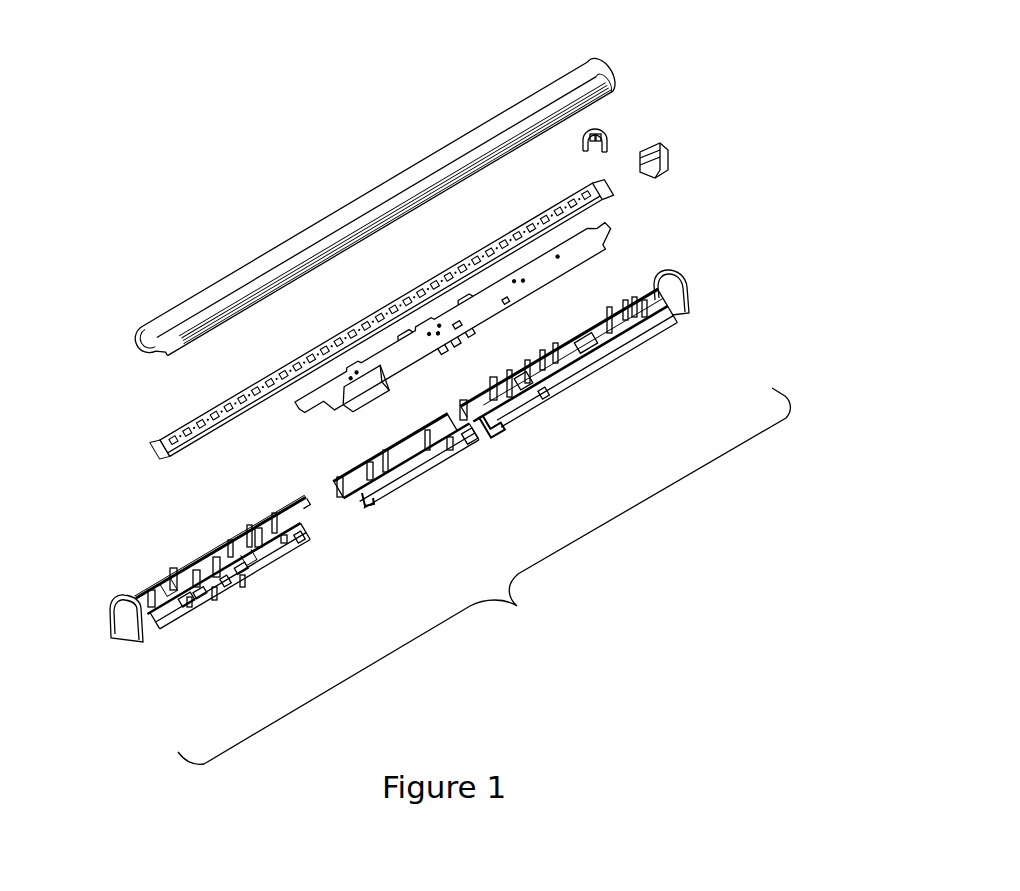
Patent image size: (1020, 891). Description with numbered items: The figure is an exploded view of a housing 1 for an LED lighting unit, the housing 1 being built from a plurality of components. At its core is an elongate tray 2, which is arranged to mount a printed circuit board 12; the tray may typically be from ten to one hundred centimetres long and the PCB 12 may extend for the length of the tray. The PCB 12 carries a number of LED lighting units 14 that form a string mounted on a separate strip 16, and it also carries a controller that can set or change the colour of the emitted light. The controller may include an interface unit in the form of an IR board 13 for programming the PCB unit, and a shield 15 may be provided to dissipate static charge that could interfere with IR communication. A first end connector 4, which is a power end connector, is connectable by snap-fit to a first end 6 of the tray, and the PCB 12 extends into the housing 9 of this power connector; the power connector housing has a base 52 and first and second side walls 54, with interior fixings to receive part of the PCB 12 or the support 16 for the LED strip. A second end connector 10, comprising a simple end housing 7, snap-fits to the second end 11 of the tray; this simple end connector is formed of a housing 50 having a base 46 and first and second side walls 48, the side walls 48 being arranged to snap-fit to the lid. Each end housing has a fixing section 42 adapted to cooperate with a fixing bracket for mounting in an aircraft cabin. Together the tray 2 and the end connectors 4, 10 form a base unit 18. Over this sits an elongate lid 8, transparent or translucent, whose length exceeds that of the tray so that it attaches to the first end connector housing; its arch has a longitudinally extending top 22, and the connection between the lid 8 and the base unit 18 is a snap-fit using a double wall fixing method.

The housing 1 is at (399, 72).
The elongate tray 2 is at (430, 472).
The first end connector 4 is at (268, 578).
The first end of the tray 6 is at (363, 507).
The simple end housing 7 is at (691, 311).
The elongate lid 8 is at (343, 207).
The housing of the power connector 9 is at (293, 500).
The second end connector 10 is at (654, 352).
The second end of the tray 11 is at (476, 437).
The printed circuit board 12 is at (322, 413).
The IR board 13 is at (671, 160).
The LED lighting units 14 is at (237, 395).
The shield 15 is at (608, 136).
The strip 16 is at (330, 333).
The base unit 18 is at (484, 576).
The top 22 is at (125, 625).
The fixing section 42 is at (527, 413).
The base 46 is at (500, 428).
The first and second side walls 48 is at (580, 328).
The housing 50 is at (673, 276).
The base 52 is at (177, 622).
The first and second side walls 54 is at (160, 578).